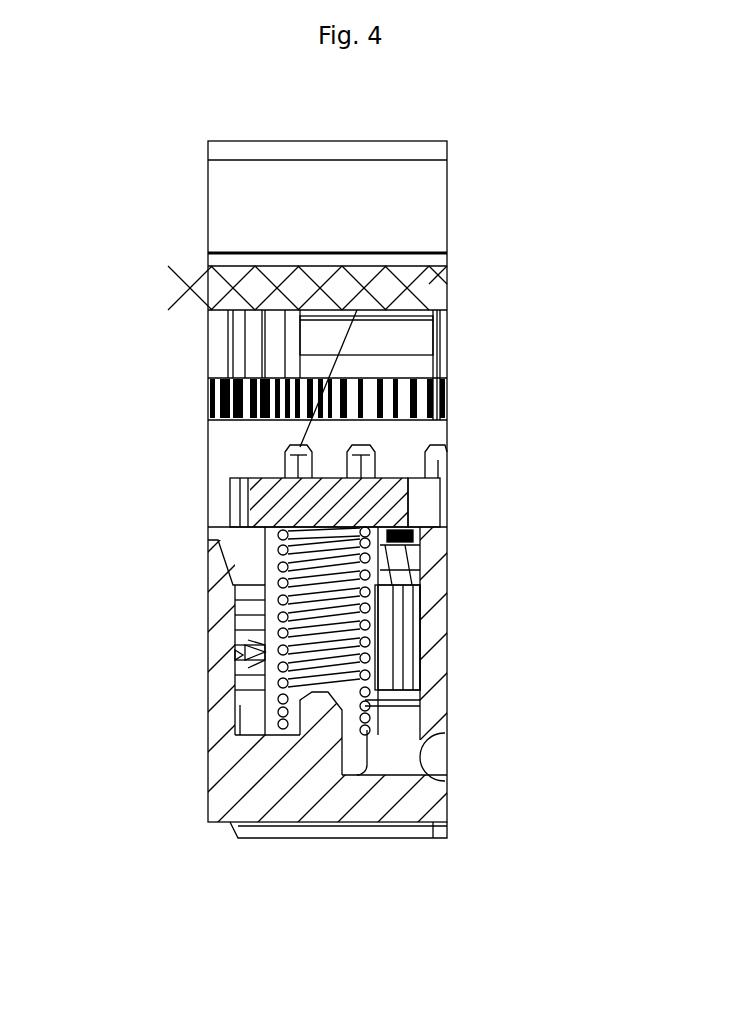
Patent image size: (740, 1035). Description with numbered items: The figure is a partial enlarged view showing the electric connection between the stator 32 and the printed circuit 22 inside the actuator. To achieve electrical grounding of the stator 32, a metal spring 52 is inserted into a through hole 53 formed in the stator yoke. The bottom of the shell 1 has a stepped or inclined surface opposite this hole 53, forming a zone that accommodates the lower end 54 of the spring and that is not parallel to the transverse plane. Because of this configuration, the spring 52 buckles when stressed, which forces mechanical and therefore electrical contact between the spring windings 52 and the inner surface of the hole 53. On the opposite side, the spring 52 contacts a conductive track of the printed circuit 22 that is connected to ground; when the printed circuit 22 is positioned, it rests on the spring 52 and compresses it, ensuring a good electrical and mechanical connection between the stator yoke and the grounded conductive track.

The shell 1 is at (261, 568).
The printed circuit 22 is at (248, 469).
The stator 32 is at (522, 610).
The metal spring 52 is at (205, 631).
The through hole 53 is at (147, 670).
The lower end of the spring 54 is at (186, 755).